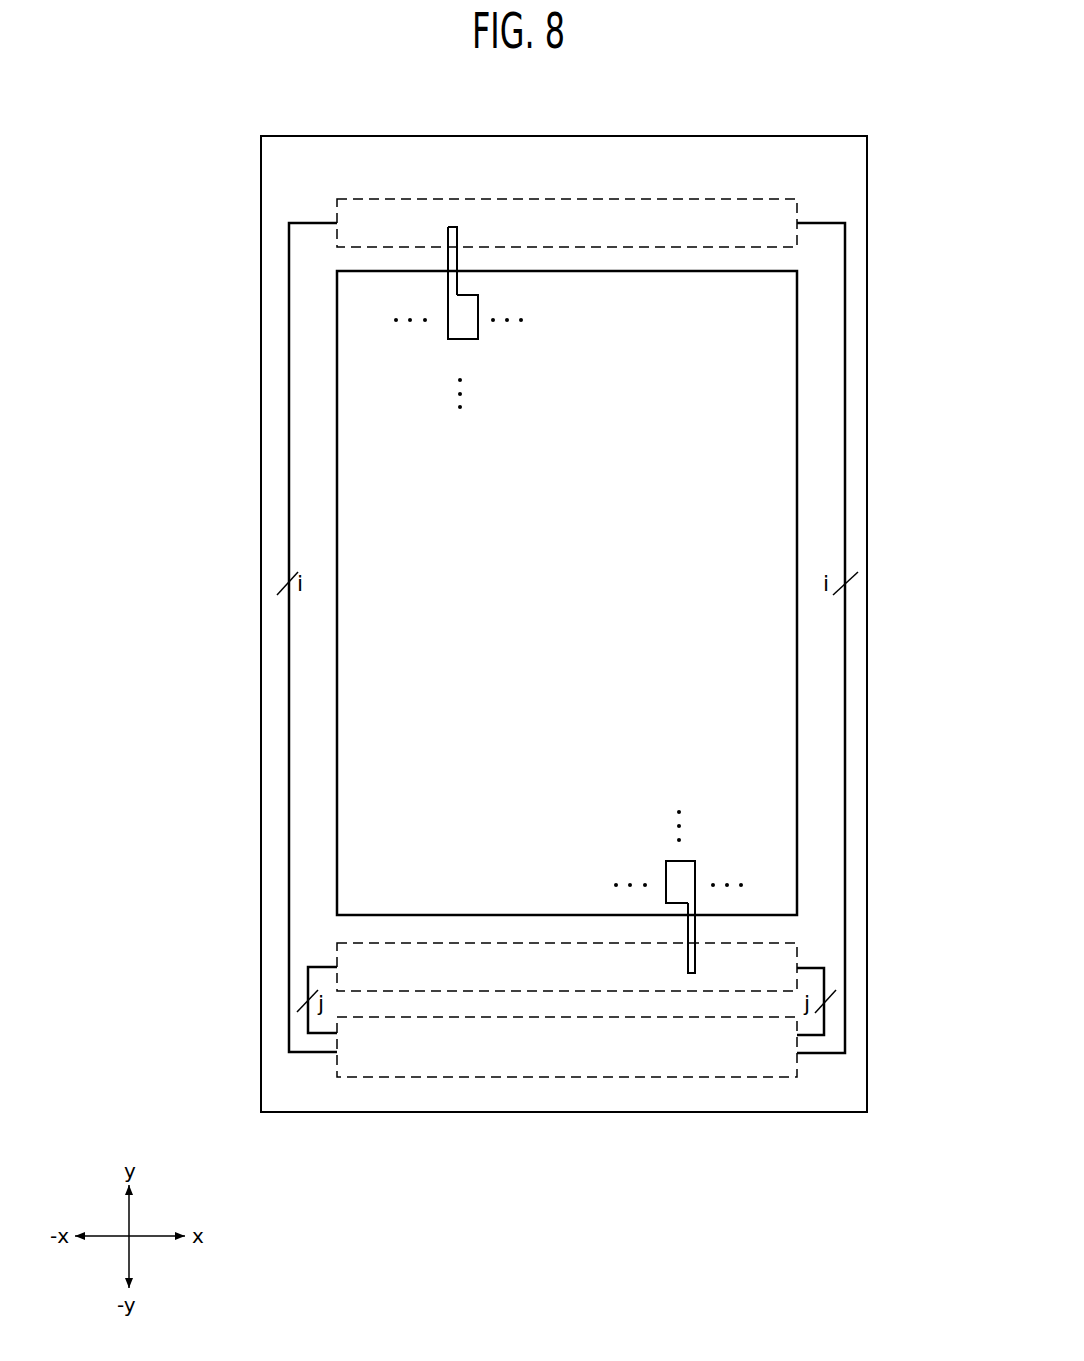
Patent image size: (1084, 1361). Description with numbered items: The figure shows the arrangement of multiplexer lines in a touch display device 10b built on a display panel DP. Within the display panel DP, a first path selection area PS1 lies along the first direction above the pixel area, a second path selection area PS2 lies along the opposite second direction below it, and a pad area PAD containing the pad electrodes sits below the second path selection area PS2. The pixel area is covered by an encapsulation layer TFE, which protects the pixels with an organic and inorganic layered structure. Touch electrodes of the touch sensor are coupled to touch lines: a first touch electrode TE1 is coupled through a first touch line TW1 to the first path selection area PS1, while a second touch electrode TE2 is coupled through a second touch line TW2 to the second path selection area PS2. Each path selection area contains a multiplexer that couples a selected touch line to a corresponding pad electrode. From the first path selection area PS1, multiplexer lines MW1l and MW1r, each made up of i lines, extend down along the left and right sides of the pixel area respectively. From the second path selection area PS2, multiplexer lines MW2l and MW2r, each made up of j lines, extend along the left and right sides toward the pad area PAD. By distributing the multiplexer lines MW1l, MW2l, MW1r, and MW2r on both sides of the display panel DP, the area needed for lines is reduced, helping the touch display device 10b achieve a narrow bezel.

The touch display device 10b is at (558, 108).
The display panel DP is at (261, 546).
The first path selection area PS1 is at (337, 206).
The second path selection area PS2 is at (337, 945).
The pad area PAD is at (337, 1070).
The encapsulation layer TFE is at (337, 410).
The multiplexer line MW1l is at (289, 703).
The multiplexer line MW1r is at (845, 703).
The multiplexer line MW2l is at (308, 983).
The multiplexer line MW2r is at (824, 1018).
The first touch line TW1 is at (448, 259).
The first touch electrode TE1 is at (448, 329).
The second touch electrode TE2 is at (695, 870).
The second touch line TW2 is at (695, 934).